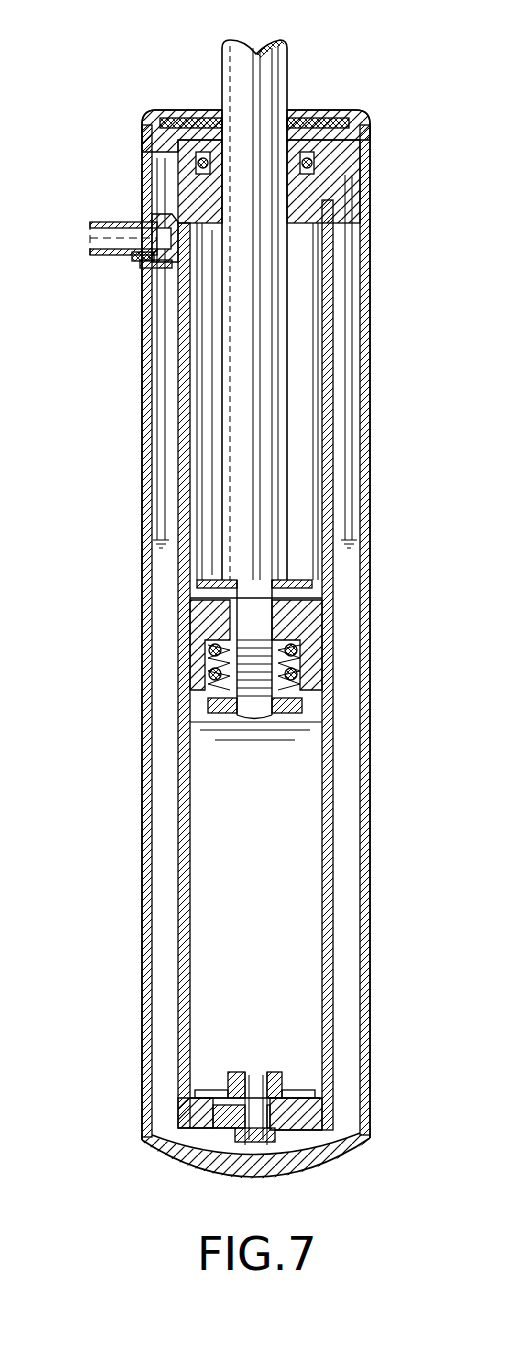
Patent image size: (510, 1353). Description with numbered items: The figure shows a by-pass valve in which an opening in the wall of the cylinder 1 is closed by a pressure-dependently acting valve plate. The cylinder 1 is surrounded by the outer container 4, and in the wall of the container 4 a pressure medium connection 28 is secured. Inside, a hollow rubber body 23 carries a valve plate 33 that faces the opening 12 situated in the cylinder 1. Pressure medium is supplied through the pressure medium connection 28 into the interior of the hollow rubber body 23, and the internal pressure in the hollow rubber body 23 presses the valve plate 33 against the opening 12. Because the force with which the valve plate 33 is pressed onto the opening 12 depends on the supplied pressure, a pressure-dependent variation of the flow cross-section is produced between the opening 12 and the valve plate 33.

The cylinder 1 is at (330, 390).
The container 4 is at (143, 447).
The opening 12 is at (152, 220).
The hollow rubber body 23 is at (160, 268).
The pressure medium connection 28 is at (94, 224).
The valve plate 33 is at (142, 256).